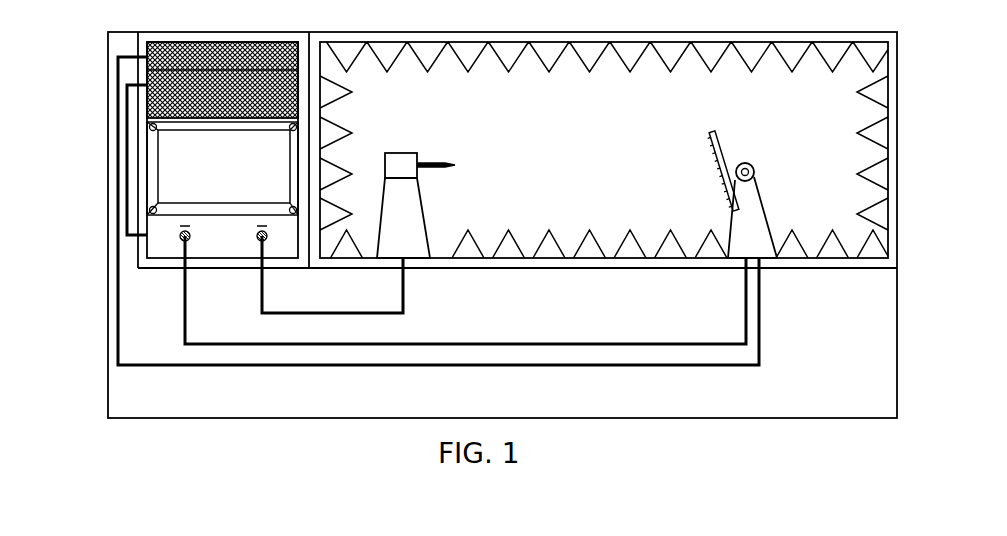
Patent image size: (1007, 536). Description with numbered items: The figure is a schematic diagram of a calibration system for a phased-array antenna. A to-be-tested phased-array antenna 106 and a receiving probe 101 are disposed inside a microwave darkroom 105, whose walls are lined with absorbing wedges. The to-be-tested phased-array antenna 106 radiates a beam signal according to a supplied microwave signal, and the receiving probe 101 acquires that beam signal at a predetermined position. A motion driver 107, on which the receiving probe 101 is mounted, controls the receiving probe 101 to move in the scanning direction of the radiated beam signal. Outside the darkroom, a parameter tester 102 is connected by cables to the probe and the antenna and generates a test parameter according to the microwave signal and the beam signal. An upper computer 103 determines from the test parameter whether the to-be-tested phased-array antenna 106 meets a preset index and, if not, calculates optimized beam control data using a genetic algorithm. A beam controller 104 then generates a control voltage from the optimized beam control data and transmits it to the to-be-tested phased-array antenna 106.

The receiving probe 101 is at (410, 152).
The parameter tester 102 is at (160, 270).
The upper computer 103 is at (146, 108).
The beam controller 104 is at (146, 51).
The microwave darkroom 105 is at (899, 132).
The to-be-tested phased-array antenna 106 is at (738, 143).
The motion driver 107 is at (412, 221).